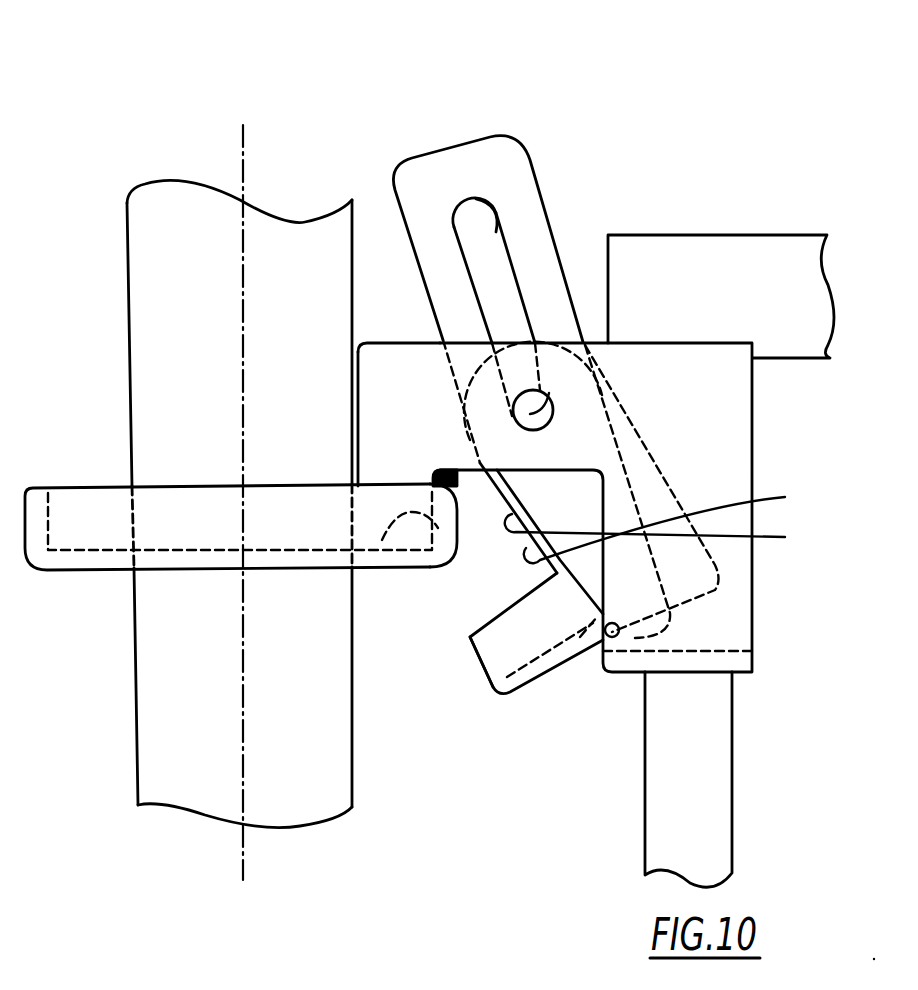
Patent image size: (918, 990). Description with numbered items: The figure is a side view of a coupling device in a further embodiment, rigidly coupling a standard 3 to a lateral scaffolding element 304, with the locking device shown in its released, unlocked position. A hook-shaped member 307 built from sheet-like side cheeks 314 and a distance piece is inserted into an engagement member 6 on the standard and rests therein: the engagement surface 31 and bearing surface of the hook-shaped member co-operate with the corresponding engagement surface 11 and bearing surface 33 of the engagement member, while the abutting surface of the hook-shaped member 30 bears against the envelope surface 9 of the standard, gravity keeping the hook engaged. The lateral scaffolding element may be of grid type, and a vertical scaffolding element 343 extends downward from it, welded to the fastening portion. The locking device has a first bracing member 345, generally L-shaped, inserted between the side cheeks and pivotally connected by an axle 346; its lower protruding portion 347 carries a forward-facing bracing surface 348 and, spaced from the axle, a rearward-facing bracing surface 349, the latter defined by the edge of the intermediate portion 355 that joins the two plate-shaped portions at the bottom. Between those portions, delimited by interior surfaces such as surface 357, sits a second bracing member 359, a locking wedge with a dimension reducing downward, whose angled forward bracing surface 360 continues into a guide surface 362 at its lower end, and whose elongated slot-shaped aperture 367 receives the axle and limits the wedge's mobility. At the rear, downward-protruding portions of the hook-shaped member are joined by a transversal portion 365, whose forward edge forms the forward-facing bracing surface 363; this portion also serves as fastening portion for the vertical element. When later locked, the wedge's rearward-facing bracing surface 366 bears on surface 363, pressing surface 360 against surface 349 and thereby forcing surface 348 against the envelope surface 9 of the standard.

The standard 3 is at (124, 375).
The engagement member 6 is at (84, 570).
The envelope surface 9 is at (353, 728).
The engagement surface 11 is at (382, 540).
The hook-shaped member 30 is at (353, 387).
The engagement surface 31 is at (432, 540).
The bearing surface 33 is at (470, 483).
The lateral scaffolding element 304 is at (717, 226).
The hook-shaped member 307 is at (377, 322).
The side cheeks 314 is at (407, 360).
The vertical scaffolding element 343 is at (718, 783).
The first bracing member 345 is at (460, 648).
The axle 346 is at (526, 392).
The lower protruding portion 347 is at (490, 655).
The forward-facing bracing surface 348 is at (503, 693).
The rearward-facing bracing surface 349 is at (575, 645).
The intermediate portion 355 is at (533, 684).
The interior surface 357 is at (548, 388).
The second bracing member 359 is at (515, 124).
The forward bracing surface 360 is at (676, 524).
The guide surface 362 is at (666, 532).
The forward-facing bracing surface 363 is at (601, 662).
The transversal portion 365 is at (687, 660).
The rearward-facing bracing surface 366 is at (657, 558).
The slot-shaped aperture 367 is at (462, 195).